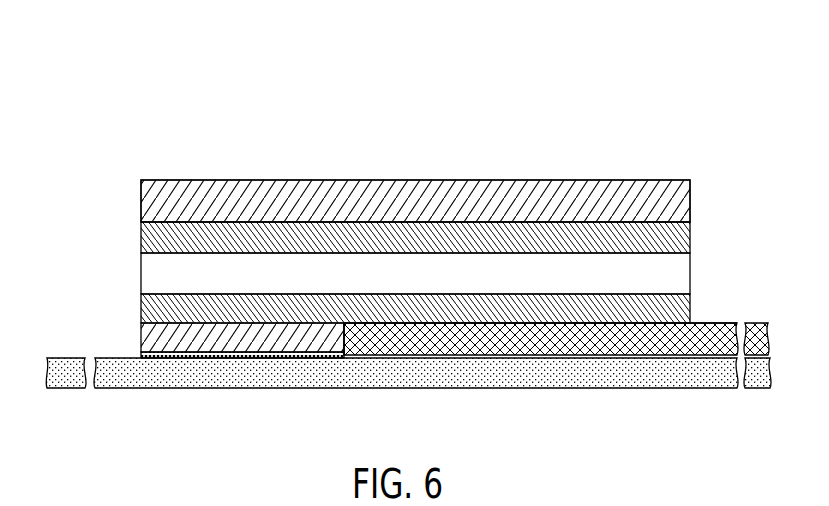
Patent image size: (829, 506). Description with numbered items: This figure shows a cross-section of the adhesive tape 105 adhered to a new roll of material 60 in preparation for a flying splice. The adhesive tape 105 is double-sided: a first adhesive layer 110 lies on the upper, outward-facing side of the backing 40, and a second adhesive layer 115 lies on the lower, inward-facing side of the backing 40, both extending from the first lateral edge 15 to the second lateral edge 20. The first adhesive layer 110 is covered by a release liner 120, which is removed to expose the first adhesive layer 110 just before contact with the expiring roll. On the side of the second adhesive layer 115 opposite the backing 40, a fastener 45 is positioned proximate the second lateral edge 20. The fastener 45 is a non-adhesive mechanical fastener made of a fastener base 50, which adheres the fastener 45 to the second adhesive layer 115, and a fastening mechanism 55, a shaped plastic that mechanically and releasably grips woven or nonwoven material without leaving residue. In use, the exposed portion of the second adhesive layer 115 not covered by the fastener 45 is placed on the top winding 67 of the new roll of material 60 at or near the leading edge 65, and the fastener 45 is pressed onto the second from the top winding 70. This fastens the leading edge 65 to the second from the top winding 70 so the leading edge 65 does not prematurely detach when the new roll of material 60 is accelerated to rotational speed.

The adhesive tape 105 is at (156, 79).
The second lateral edge 20 is at (141, 200).
The first lateral edge 15 is at (690, 200).
The release liner 120 is at (538, 195).
The first adhesive layer 110 is at (680, 238).
The backing 40 is at (678, 275).
The second adhesive layer 115 is at (680, 313).
The fastener 45 is at (130, 318).
The fastener base 50 is at (142, 338).
The fastening mechanism 55 is at (294, 360).
The new roll of material 60 is at (553, 380).
The leading edge 65 is at (357, 340).
The top winding 67 is at (415, 335).
The second from the top winding 70 is at (225, 370).